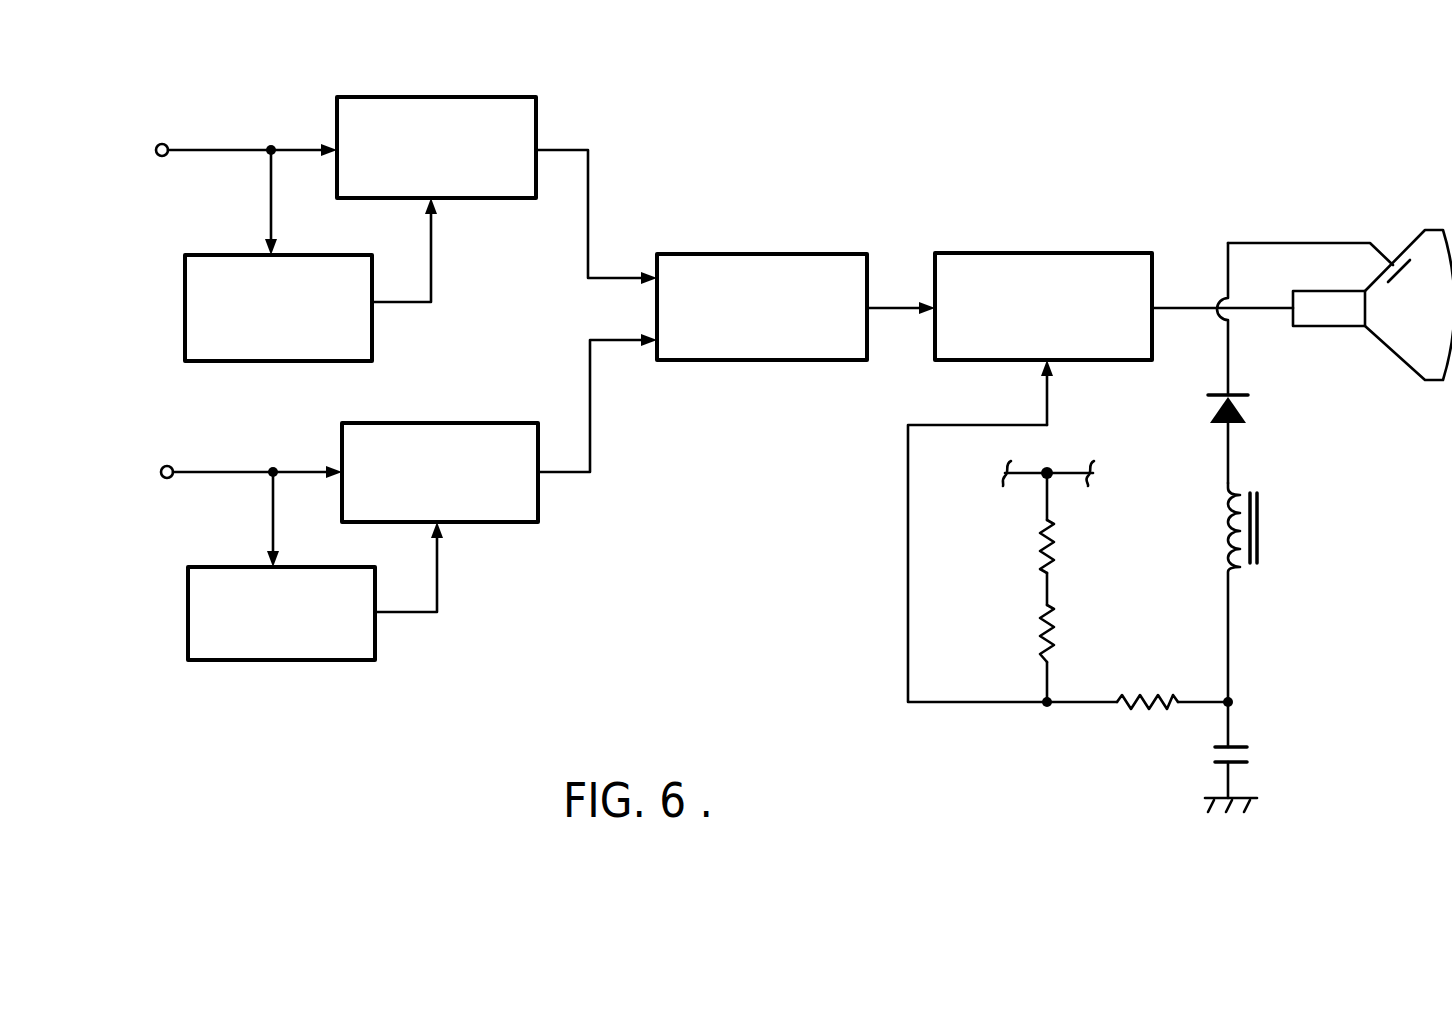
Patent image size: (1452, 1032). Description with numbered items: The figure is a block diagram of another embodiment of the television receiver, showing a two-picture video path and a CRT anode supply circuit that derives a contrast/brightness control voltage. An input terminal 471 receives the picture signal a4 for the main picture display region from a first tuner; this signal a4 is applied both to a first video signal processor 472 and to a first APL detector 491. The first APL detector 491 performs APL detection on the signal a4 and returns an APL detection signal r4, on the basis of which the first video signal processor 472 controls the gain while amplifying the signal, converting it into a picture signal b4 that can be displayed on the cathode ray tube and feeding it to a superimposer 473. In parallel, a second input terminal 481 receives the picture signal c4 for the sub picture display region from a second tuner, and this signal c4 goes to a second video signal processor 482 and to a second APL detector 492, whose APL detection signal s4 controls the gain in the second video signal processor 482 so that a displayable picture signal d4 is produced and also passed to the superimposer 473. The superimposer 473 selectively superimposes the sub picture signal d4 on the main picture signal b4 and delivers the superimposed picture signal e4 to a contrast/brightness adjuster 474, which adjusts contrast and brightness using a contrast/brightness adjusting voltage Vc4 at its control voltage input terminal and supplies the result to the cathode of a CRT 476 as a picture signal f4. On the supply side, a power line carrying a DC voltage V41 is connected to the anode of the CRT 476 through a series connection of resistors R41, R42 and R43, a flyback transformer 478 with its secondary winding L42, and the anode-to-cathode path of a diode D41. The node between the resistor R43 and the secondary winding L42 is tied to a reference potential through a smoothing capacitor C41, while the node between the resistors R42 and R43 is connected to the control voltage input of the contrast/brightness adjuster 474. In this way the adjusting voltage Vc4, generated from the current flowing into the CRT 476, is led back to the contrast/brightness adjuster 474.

The input terminal 471 is at (163, 143).
The first video signal processor 472 is at (468, 97).
The superimposer 473 is at (778, 254).
The contrast/brightness adjuster 474 is at (1080, 253).
The CRT 476 is at (1402, 362).
The flyback transformer 478 is at (1260, 530).
The input terminal 481 is at (167, 466).
The second video signal processor 482 is at (441, 423).
The first APL detector 491 is at (312, 361).
The second APL detector 492 is at (320, 661).
The picture signal for the main picture display region a4 is at (223, 191).
The picture signal b4 is at (588, 148).
The picture signal for the sub picture display region c4 is at (230, 509).
The picture signal d4 is at (590, 430).
The superimposed picture signal e4 is at (892, 305).
The picture signal f4 is at (1190, 309).
The APL detection signal r4 is at (431, 250).
The APL detection signal s4 is at (437, 575).
The contrast/brightness adjusting voltage Vc4 is at (1047, 408).
The DC voltage V41 is at (1070, 472).
The resistor R41 is at (1075, 523).
The resistor R42 is at (1076, 637).
The resistor R43 is at (1175, 723).
The diode D41 is at (1255, 363).
The secondary winding L42 is at (1199, 592).
The smoothing capacitor C41 is at (1251, 757).